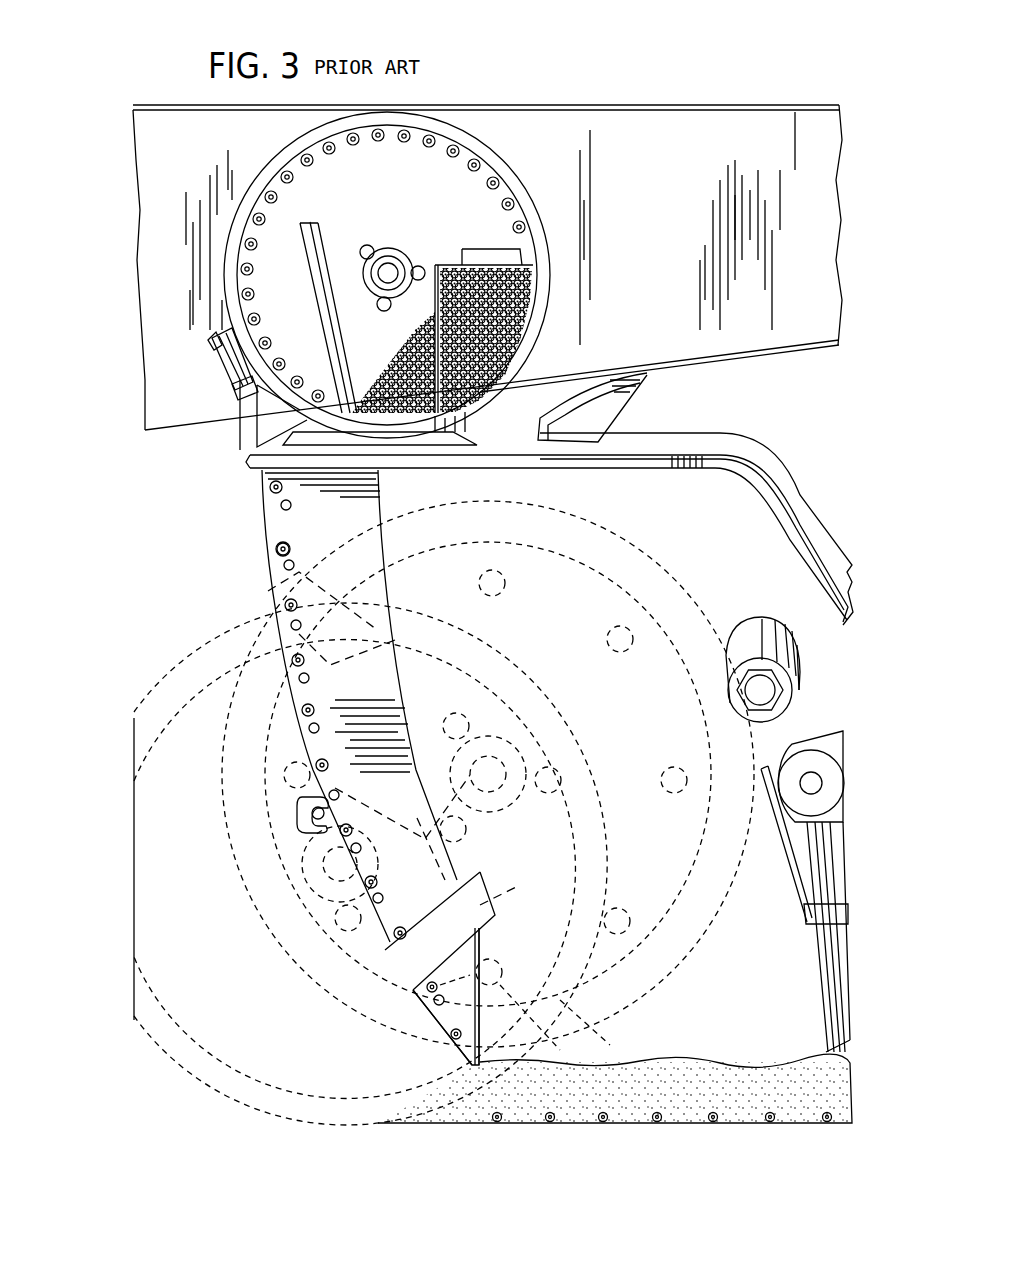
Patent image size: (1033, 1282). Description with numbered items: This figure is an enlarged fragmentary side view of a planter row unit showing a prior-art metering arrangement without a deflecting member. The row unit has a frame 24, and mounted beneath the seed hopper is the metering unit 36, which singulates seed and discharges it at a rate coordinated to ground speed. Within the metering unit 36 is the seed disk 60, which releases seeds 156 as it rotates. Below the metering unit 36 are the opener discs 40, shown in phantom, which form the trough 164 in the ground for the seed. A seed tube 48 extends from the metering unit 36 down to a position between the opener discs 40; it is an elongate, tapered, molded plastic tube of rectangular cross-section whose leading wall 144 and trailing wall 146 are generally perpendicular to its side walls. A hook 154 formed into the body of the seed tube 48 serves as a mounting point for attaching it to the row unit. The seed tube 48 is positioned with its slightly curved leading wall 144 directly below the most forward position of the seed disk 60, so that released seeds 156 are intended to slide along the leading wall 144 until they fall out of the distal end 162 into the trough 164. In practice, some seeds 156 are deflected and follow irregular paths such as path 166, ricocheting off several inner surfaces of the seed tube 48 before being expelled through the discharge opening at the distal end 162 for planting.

The frame 24 is at (845, 213).
The metering unit 36 is at (520, 166).
The seed disk 60 is at (455, 147).
The seed tube 48 is at (263, 532).
The leading wall 144 is at (263, 515).
The trailing wall 146 is at (382, 485).
The seeds 156 is at (276, 551).
The path 166 is at (268, 591).
The hook 154 is at (297, 820).
The distal end 162 is at (482, 950).
The opener discs 40 is at (150, 1040).
The trough 164 is at (792, 1123).